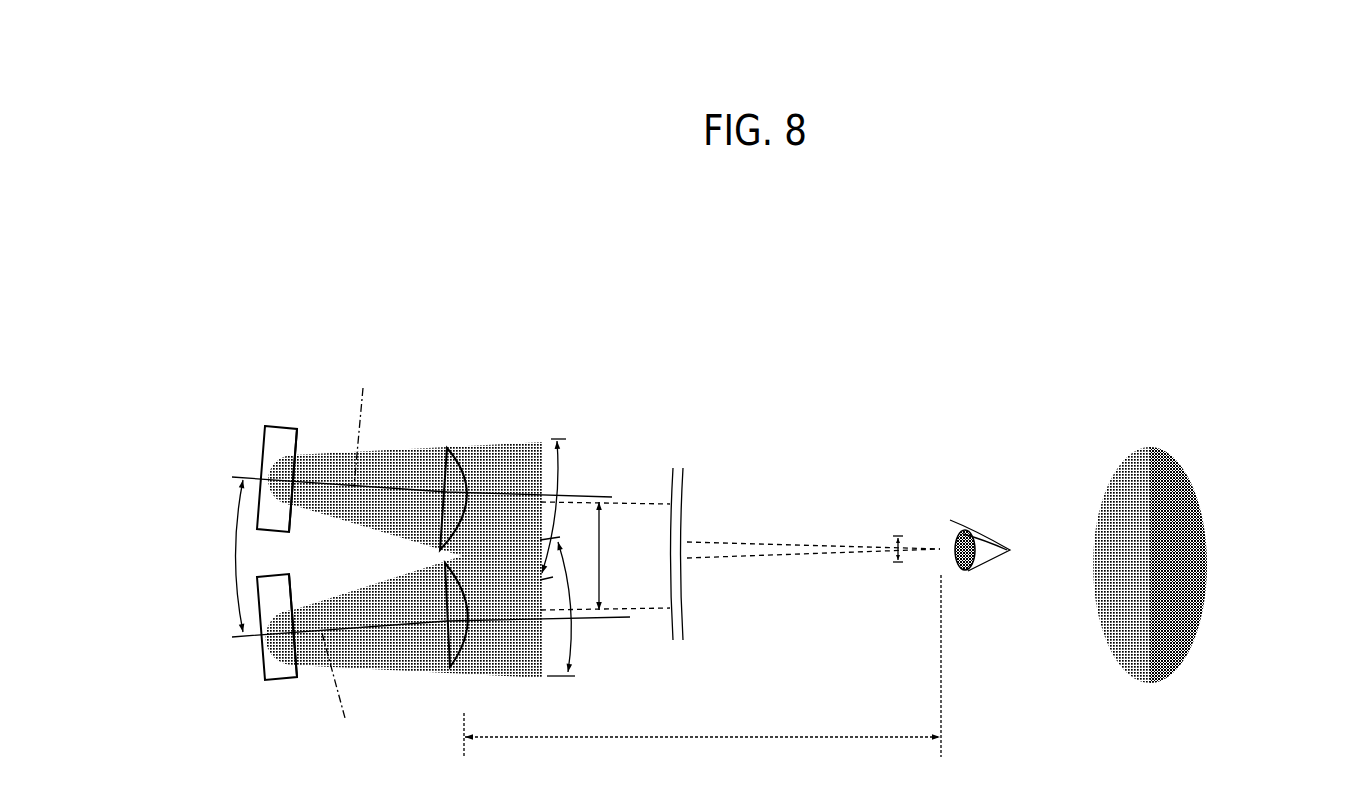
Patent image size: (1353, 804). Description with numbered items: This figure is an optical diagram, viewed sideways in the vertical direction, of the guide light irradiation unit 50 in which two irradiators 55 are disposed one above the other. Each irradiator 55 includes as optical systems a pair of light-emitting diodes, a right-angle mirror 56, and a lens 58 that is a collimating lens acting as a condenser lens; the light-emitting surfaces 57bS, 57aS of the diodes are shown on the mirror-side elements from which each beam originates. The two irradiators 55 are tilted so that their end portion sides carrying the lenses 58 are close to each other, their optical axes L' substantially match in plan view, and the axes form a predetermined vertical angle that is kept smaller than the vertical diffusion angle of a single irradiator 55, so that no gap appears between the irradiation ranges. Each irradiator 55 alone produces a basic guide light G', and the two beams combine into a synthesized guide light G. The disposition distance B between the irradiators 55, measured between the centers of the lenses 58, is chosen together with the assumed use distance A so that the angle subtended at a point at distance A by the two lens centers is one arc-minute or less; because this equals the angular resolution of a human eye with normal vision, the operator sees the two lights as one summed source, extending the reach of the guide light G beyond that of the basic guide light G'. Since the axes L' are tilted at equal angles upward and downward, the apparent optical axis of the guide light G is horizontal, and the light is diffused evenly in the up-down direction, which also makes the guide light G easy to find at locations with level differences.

The guide light irradiation unit 50 is at (198, 320).
The irradiator 55 is at (208, 474).
The right-angle mirror 56 is at (275, 425).
The light emitting surface 57bS is at (320, 554).
The light emitting surface 57aS is at (294, 485).
The lens 58 is at (450, 448).
The optical axis L' is at (345, 555).
The basic guide light G' is at (405, 555).
The guide light G is at (924, 544).
The assumed use distance A is at (702, 666).
The disposition distance B is at (608, 556).